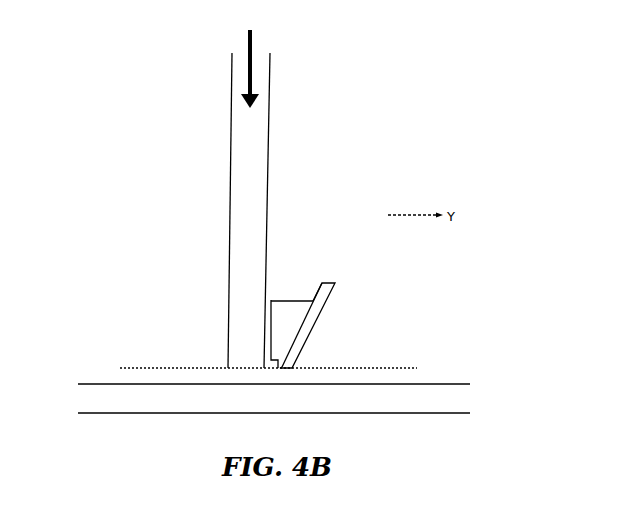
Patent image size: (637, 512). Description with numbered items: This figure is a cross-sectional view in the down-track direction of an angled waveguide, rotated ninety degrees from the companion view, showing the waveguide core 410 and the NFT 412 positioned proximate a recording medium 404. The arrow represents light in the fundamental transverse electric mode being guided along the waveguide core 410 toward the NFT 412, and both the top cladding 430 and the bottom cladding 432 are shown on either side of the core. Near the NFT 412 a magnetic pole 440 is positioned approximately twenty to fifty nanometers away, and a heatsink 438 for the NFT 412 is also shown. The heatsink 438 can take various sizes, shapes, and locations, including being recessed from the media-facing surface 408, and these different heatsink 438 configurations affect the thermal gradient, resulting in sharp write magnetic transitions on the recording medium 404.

The recording medium 404 is at (274, 398).
The media-facing surface 408 is at (158, 366).
The waveguide core 410 is at (272, 92).
The NFT 412 is at (276, 294).
The top cladding 430 is at (300, 210).
The bottom cladding 432 is at (179, 210).
The heatsink 438 is at (299, 298).
The magnetic pole 440 is at (315, 340).